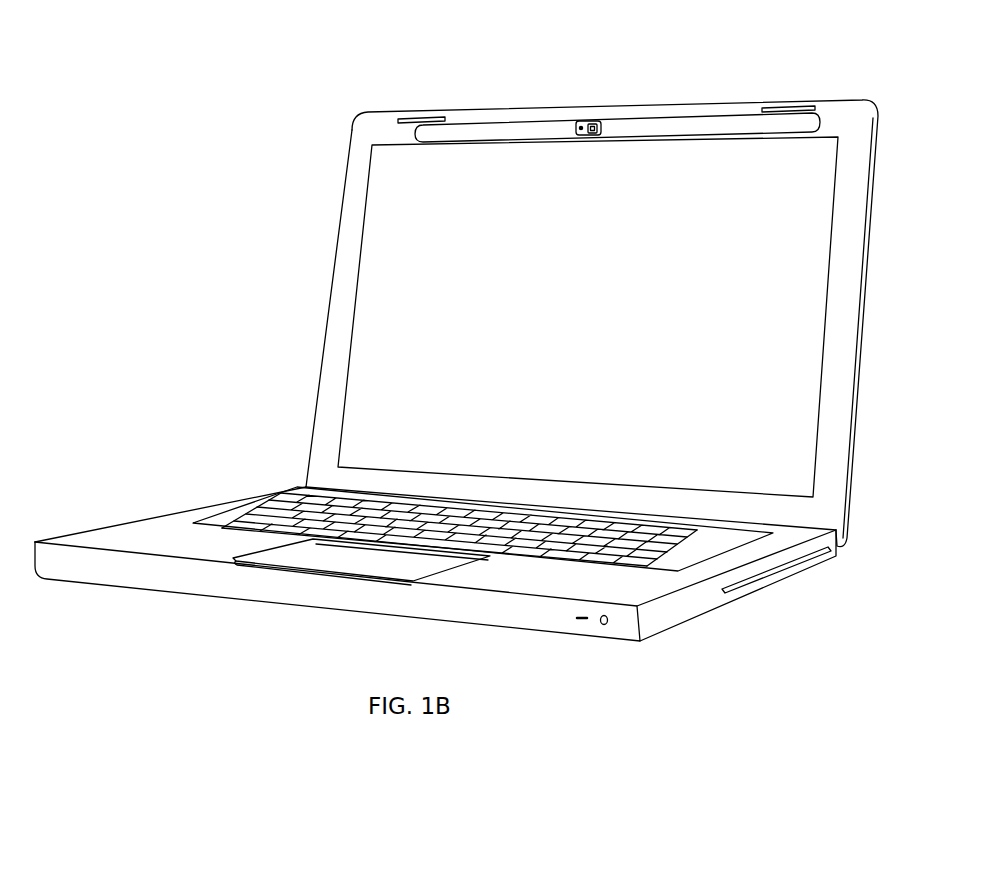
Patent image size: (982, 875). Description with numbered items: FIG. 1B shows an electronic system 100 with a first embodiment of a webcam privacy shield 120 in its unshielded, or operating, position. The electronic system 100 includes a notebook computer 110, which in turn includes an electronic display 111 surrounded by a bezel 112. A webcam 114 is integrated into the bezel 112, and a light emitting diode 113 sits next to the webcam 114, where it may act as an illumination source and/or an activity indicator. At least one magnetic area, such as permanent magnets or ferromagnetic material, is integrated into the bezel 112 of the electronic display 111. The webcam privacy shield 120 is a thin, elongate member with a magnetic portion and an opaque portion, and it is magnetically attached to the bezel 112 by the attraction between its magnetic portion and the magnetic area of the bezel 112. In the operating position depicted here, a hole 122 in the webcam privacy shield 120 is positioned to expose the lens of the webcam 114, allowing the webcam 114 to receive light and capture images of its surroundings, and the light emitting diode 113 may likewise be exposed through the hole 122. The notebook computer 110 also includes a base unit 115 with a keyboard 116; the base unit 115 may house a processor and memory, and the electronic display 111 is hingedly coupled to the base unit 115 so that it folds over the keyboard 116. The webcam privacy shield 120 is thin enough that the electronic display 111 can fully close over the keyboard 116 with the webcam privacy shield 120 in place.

The electronic system 100 is at (222, 85).
The notebook computer 110 is at (281, 440).
The electronic display 111 is at (370, 318).
The bezel 112 is at (336, 253).
The light emitting diode (LED) 113 is at (578, 123).
The webcam 114 is at (601, 125).
The base unit 115 is at (157, 516).
The keyboard 116 is at (277, 505).
The webcam privacy shield 120 is at (485, 127).
The hole 122 is at (592, 122).